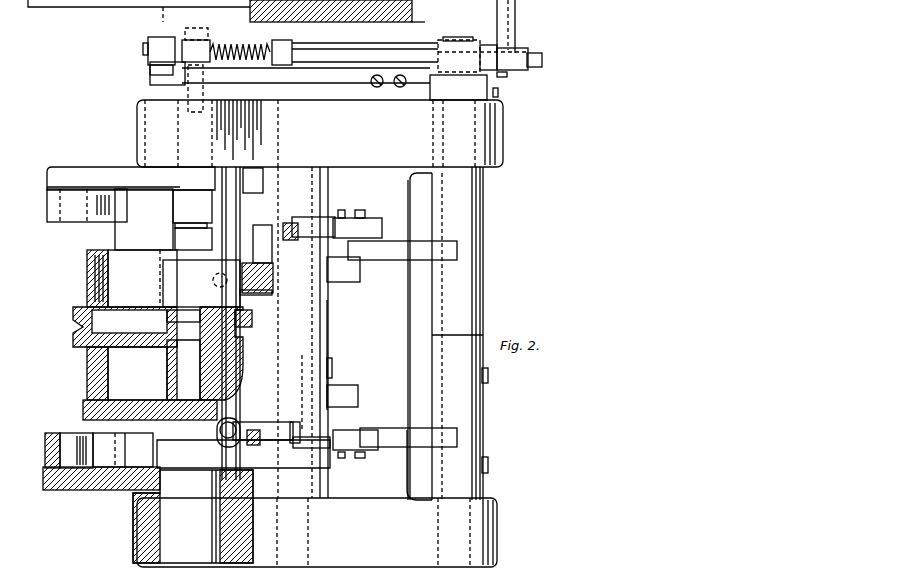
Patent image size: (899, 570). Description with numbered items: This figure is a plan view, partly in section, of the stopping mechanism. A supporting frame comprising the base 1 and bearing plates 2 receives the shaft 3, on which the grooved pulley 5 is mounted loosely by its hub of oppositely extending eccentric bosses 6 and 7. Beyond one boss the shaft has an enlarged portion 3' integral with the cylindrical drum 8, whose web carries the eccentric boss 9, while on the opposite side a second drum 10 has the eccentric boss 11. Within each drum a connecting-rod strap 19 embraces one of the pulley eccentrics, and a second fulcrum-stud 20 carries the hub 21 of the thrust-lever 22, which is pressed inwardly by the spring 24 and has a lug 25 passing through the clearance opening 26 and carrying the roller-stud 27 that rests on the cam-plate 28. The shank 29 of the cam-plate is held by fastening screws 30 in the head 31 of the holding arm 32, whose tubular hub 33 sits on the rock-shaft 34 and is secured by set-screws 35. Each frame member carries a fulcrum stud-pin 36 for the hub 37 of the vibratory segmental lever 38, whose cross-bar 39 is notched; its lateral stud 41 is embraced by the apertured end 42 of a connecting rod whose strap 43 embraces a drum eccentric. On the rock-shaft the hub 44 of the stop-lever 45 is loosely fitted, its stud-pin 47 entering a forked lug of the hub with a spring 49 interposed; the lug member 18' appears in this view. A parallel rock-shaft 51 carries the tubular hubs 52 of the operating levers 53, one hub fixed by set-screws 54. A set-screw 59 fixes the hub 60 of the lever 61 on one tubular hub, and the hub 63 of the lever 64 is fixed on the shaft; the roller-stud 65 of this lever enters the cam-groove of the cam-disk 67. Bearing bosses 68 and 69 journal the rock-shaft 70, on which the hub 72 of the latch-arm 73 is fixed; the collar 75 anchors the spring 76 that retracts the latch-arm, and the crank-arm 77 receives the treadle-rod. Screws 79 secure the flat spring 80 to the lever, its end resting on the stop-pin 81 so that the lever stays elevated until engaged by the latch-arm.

The base 1 is at (338, 187).
The bearing plates 2 is at (320, 133).
The shaft 3 is at (183, 370).
The enlarged portion 3' is at (193, 516).
The grooved pulley 5 is at (85, 307).
The eccentric boss 6 is at (221, 353).
The eccentric boss 7 is at (252, 316).
The cylindrical drum 8 is at (87, 375).
The eccentric boss 9 is at (115, 415).
The second drum 10 is at (87, 278).
The eccentric boss 11 is at (125, 235).
The housing portion 18' is at (236, 390).
The strap 19 is at (163, 367).
The second fulcrum-stud 20 is at (136, 278).
The hub 21 is at (187, 322).
The thrust-lever 22 is at (305, 340).
The spring 24 is at (214, 284).
The lug 25 is at (273, 285).
The clearance opening 26 is at (240, 263).
The roller-stud 27 is at (262, 228).
The cam-plate 28 is at (291, 224).
The shank 29 is at (320, 218).
The fastening screws 30 is at (351, 337).
The head 31 is at (357, 334).
The holding arm 32 is at (362, 238).
The tubular hub 33 is at (320, 332).
The rock-shaft 34 is at (308, 535).
The set-screws 35 is at (333, 362).
The fulcrum stud-pin 36 is at (193, 236).
The hub 37 is at (192, 206).
The vibratory segmental lever 38 is at (33, 483).
The cross-bar 39 is at (123, 450).
The lateral stud 41 is at (76, 450).
The apertured end 42 is at (45, 450).
The strap 43 is at (117, 430).
The hub 44 is at (330, 180).
The stop-lever 45 is at (248, 200).
The stud-pin 47 is at (213, 443).
The spring 49 is at (213, 435).
The rock-shaft 51 is at (457, 43).
The tubular hubs 52 is at (445, 333).
The operating levers 53 is at (402, 344).
The set-screws 54 is at (488, 380).
The set-screw 59 is at (499, 93).
The hub 60 is at (458, 87).
The lever 61 is at (170, 85).
The hub 63 is at (482, 47).
The lever 64 is at (365, 46).
The roller-stud 65 is at (185, 30).
The cam-disk 67 is at (252, 25).
The bearing boss 68 is at (459, 54).
The bearing boss 69 is at (196, 51).
The rock-shaft 70 is at (437, 58).
The hub 72 is at (159, 51).
The latch-arm 73 is at (150, 70).
The collar 75 is at (280, 41).
The spring 76 is at (250, 43).
The crank-arm 77 is at (508, 15).
The screws 79 is at (378, 87).
The flat spring 80 is at (306, 77).
The stop-pin 81 is at (205, 91).